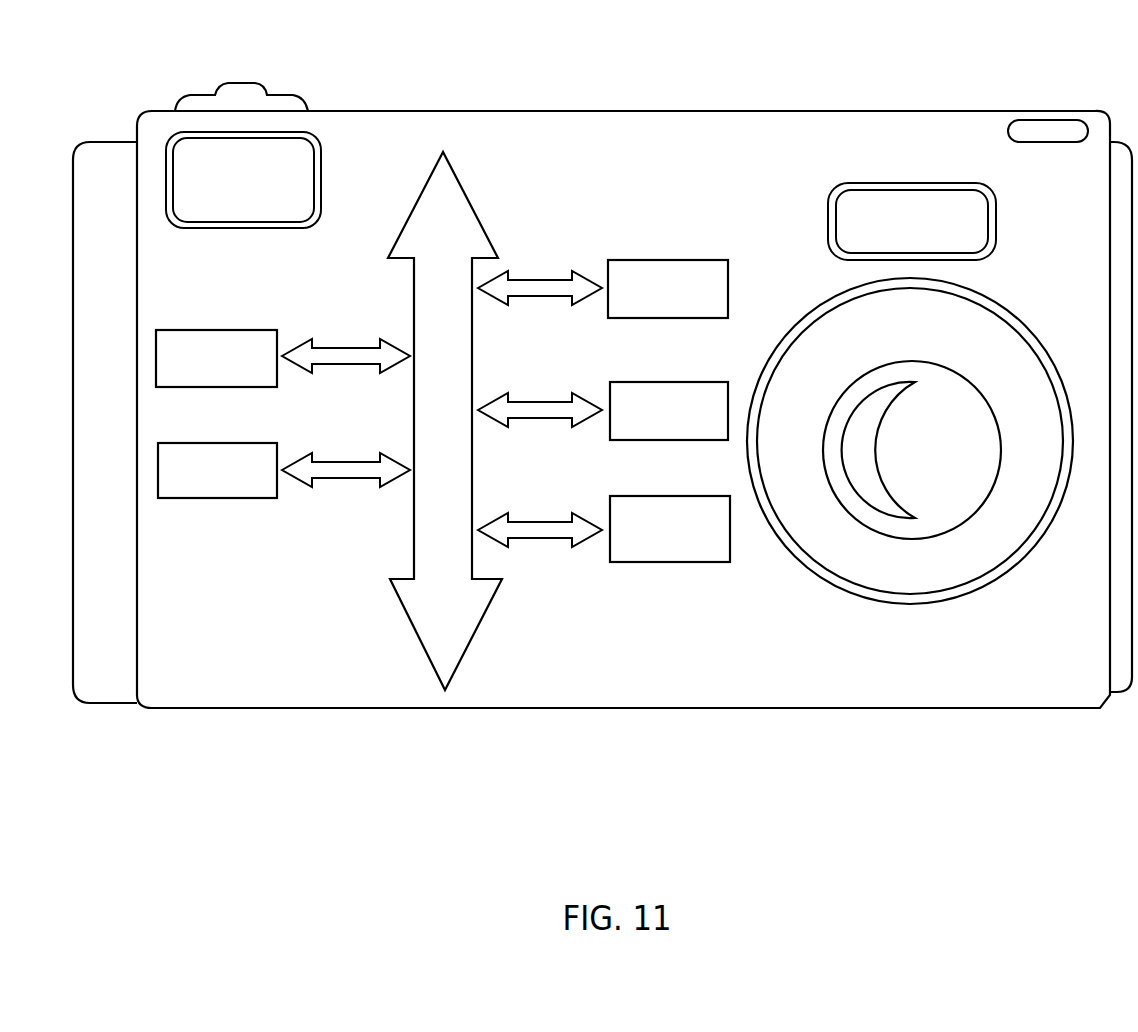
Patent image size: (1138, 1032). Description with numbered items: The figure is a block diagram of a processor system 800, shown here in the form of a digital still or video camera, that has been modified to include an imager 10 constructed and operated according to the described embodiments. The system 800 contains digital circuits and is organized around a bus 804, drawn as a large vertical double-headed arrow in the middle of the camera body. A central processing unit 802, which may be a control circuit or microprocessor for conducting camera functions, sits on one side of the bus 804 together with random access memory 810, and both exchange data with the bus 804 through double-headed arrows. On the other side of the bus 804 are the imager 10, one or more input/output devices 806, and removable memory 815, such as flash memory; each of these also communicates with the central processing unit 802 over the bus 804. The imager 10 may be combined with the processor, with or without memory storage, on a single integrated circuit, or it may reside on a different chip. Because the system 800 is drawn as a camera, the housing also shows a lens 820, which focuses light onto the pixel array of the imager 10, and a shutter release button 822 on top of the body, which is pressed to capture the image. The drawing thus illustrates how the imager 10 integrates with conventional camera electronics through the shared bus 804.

The system 800 is at (948, 67).
The central processing unit 802 is at (222, 330).
The bus 804 is at (426, 420).
The input/output device 806 is at (680, 380).
The random access memory 810 is at (222, 443).
The removable memory 815 is at (670, 496).
The lens 820 is at (1025, 320).
The shutter release button 822 is at (267, 82).
The imager 10 is at (651, 259).